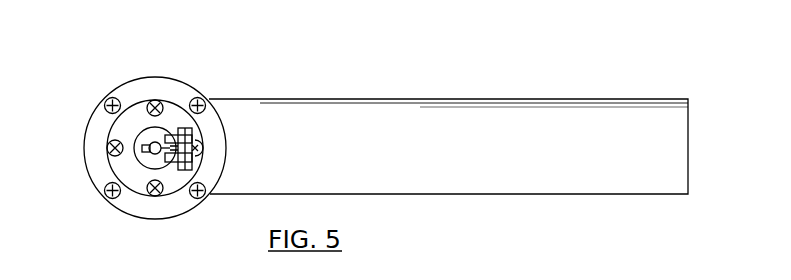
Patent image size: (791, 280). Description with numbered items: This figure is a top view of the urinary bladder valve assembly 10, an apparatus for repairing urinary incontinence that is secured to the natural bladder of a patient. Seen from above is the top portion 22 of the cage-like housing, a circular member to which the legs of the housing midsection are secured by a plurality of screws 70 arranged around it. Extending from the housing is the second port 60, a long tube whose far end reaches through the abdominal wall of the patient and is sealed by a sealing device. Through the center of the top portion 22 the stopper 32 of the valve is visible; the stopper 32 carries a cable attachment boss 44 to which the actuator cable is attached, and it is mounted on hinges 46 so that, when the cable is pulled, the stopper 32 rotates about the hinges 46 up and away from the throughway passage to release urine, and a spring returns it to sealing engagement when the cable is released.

The urinary bladder valve assembly 10 is at (350, 152).
The top portion 22 is at (97, 145).
The stopper 32 is at (150, 166).
The cable attachment boss 44 is at (145, 153).
The hinges 46 is at (182, 127).
The second port 60 is at (510, 99).
The screws 70 is at (106, 98).